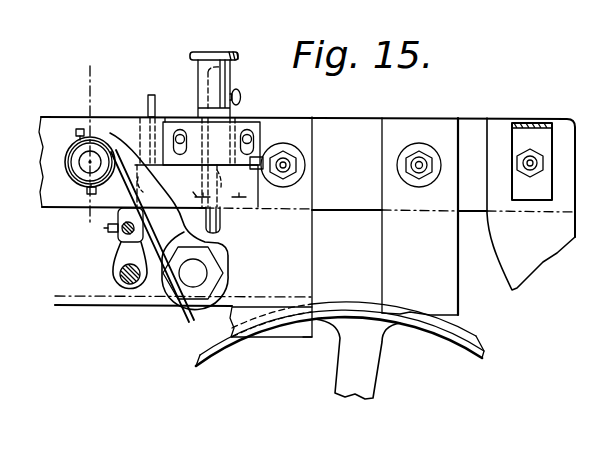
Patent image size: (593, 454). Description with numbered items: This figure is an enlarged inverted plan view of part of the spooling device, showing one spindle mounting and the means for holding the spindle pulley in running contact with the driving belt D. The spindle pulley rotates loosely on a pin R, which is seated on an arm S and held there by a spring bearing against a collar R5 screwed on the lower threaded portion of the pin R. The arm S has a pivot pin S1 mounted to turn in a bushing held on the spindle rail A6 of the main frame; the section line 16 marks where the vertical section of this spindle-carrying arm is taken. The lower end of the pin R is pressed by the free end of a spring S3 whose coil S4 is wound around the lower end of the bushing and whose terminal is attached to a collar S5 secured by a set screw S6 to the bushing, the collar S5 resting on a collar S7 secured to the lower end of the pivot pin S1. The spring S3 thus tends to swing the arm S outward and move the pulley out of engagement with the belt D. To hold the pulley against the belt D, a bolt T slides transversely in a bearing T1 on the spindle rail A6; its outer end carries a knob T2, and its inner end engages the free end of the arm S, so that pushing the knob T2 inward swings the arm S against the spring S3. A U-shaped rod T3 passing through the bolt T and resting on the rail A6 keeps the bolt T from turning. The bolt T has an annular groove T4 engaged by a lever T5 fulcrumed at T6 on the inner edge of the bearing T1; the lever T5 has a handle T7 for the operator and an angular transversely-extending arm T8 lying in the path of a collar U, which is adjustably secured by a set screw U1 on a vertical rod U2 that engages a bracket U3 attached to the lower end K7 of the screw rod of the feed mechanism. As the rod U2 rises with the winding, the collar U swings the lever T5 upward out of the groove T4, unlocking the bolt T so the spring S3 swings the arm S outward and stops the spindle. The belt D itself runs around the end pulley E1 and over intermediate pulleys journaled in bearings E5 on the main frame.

The spindle rail A6 is at (370, 125).
The bolt T is at (217, 222).
The bearing T1 is at (234, 111).
The knob T2 is at (209, 50).
The U-shaped rod T3 is at (192, 164).
The annular groove T4 is at (235, 164).
The lever T5 is at (145, 165).
The fulcrum T6 is at (277, 176).
The handle T7 is at (153, 94).
The angular transversely-extending arm T8 is at (196, 186).
The arm S is at (222, 259).
The pivot pin S1 is at (84, 168).
The spring S3 is at (191, 318).
The coil S4 is at (68, 160).
The collar S5 is at (72, 138).
The set screw S6 is at (84, 130).
The collar S7 is at (87, 194).
The section line 16 is at (93, 145).
The pin R is at (203, 279).
The collar R5 is at (193, 297).
The collar U is at (122, 238).
The set screw U1 is at (110, 231).
The rod U2 is at (176, 240).
The bracket U3 is at (117, 263).
The lower end of the screw rod K7 is at (133, 286).
The bearing E5 is at (390, 254).
The end pulley E1 is at (368, 358).
The belt D is at (477, 357).